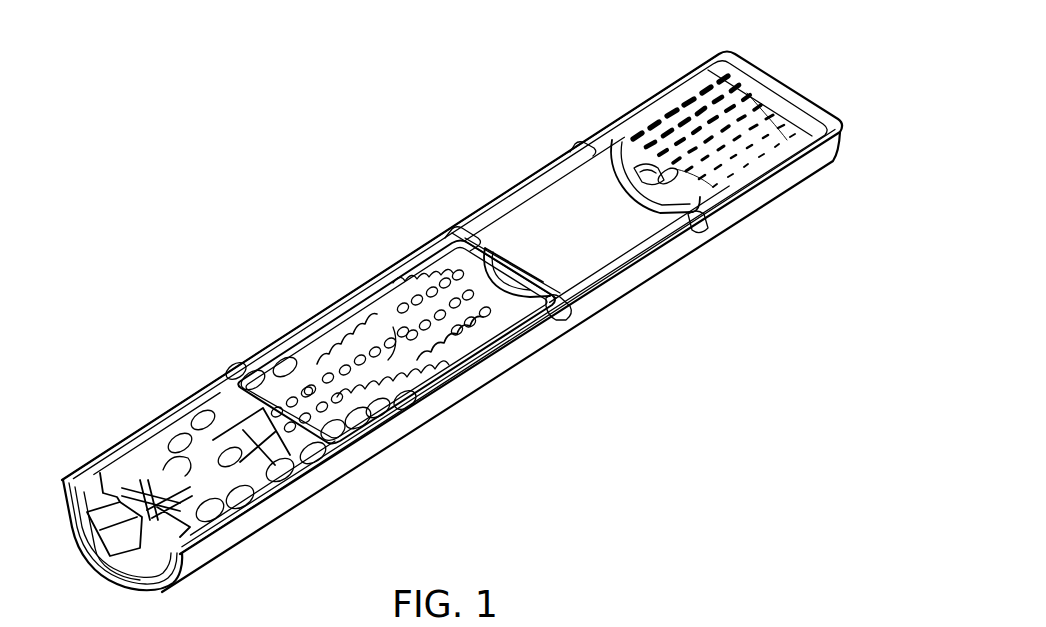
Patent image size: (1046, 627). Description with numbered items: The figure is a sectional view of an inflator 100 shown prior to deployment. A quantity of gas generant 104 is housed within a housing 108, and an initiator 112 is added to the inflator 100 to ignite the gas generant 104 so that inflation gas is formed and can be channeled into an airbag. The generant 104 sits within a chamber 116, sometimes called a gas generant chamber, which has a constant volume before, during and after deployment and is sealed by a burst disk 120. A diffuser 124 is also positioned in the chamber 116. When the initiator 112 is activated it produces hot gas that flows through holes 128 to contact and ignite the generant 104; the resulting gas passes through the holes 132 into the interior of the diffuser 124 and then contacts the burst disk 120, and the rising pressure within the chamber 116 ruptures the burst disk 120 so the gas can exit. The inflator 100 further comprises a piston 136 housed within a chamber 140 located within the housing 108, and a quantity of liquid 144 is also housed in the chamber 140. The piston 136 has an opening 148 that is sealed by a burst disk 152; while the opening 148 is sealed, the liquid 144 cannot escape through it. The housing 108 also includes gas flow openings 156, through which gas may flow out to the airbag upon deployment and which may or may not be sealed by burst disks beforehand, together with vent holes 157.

The inflator 100 is at (280, 293).
The gas generant 104 is at (235, 370).
The housing 108 is at (378, 277).
The initiator 112 is at (147, 498).
The chamber 116 is at (350, 318).
The burst disk 120 is at (510, 325).
The diffuser 124 is at (505, 327).
The holes 128 is at (177, 487).
The holes 132 is at (312, 322).
The piston 136 is at (560, 222).
The chamber 140 is at (622, 135).
The liquid 144 is at (725, 102).
The opening 148 is at (668, 166).
The burst disk 152 is at (646, 162).
The gas flow openings 156 is at (440, 234).
The vent holes 157 is at (697, 228).